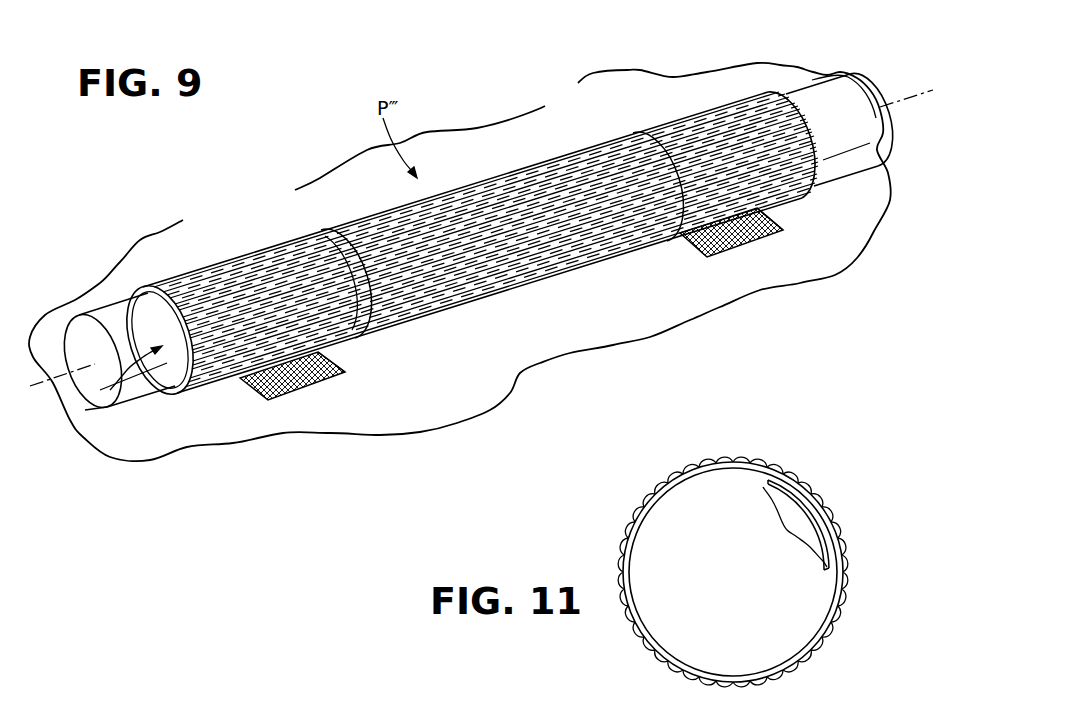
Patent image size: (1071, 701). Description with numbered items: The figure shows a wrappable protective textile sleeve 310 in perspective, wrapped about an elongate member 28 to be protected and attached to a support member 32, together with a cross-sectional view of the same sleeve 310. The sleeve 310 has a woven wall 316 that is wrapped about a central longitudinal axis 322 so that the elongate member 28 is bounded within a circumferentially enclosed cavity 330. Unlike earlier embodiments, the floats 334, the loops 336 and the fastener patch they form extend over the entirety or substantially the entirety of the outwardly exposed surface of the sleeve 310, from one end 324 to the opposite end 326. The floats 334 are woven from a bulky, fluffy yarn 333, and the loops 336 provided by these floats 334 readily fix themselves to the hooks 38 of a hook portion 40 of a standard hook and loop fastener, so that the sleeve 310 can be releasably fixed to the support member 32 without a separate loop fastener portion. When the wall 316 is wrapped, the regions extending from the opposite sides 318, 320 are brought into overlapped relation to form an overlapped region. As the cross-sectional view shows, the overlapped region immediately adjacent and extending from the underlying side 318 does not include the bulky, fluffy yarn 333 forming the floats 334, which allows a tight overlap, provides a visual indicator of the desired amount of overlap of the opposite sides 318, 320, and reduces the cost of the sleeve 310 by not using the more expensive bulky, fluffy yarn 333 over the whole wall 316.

In FIG. 9, the elongate member 28 is at (473, 207).
In FIG. 9, the support member 32 is at (575, 333).
In FIG. 9, the hooks 38 is at (323, 353).
In FIG. 9, the hook portion 40 is at (287, 393).
In FIG. 9, the sleeve 310 is at (466, 248).
In FIG. 11, the sleeve 310 is at (698, 560).
In FIG. 9, the wall 316 is at (466, 293).
In FIG. 11, the wall 316 is at (695, 560).
In FIG. 9, the underlying side 318 is at (80, 427).
In FIG. 11, the underlying side 318 is at (762, 481).
In FIG. 9, the opposite side 320 is at (363, 280).
In FIG. 11, the opposite side 320 is at (847, 563).
In FIG. 9, the central longitudinal axis 322 is at (893, 103).
In FIG. 9, the end 324 is at (153, 400).
In FIG. 9, the opposite end 326 is at (843, 73).
In FIG. 9, the cavity 330 is at (80, 427).
In FIG. 9, the bulky, fluffy yarn 333 is at (431, 214).
In FIG. 11, the bulky, fluffy yarn 333 is at (695, 560).
In FIG. 9, the floats 334 is at (431, 214).
In FIG. 11, the floats 334 is at (695, 560).
In FIG. 9, the loops 336 is at (335, 235).
In FIG. 11, the loops 336 is at (810, 477).